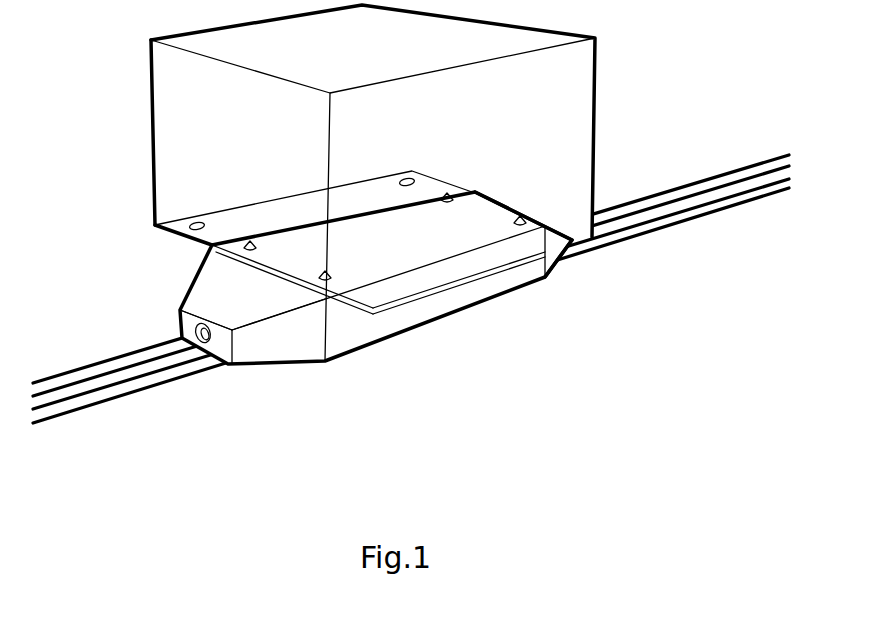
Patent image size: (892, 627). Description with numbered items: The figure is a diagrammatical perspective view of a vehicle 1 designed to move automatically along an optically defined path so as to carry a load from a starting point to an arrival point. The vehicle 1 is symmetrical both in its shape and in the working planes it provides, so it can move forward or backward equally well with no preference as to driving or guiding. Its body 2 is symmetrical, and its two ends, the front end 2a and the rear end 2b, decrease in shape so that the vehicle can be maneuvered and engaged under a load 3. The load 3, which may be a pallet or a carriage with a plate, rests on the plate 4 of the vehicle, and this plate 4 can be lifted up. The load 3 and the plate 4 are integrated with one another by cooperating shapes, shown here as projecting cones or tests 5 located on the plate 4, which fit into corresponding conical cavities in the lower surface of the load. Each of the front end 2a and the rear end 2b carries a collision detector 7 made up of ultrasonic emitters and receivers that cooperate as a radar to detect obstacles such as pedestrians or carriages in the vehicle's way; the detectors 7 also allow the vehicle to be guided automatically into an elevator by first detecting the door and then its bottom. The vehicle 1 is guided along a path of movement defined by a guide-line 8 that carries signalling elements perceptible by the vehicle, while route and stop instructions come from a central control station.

The vehicle 1 is at (210, 287).
The body 2 is at (449, 278).
The front end 2a is at (303, 333).
The rear end 2b is at (556, 245).
The load 3 is at (578, 93).
The plate 4 is at (394, 236).
The projecting cones 5 is at (250, 243).
The collision detector 7 is at (208, 356).
The guide-line 8 is at (92, 387).